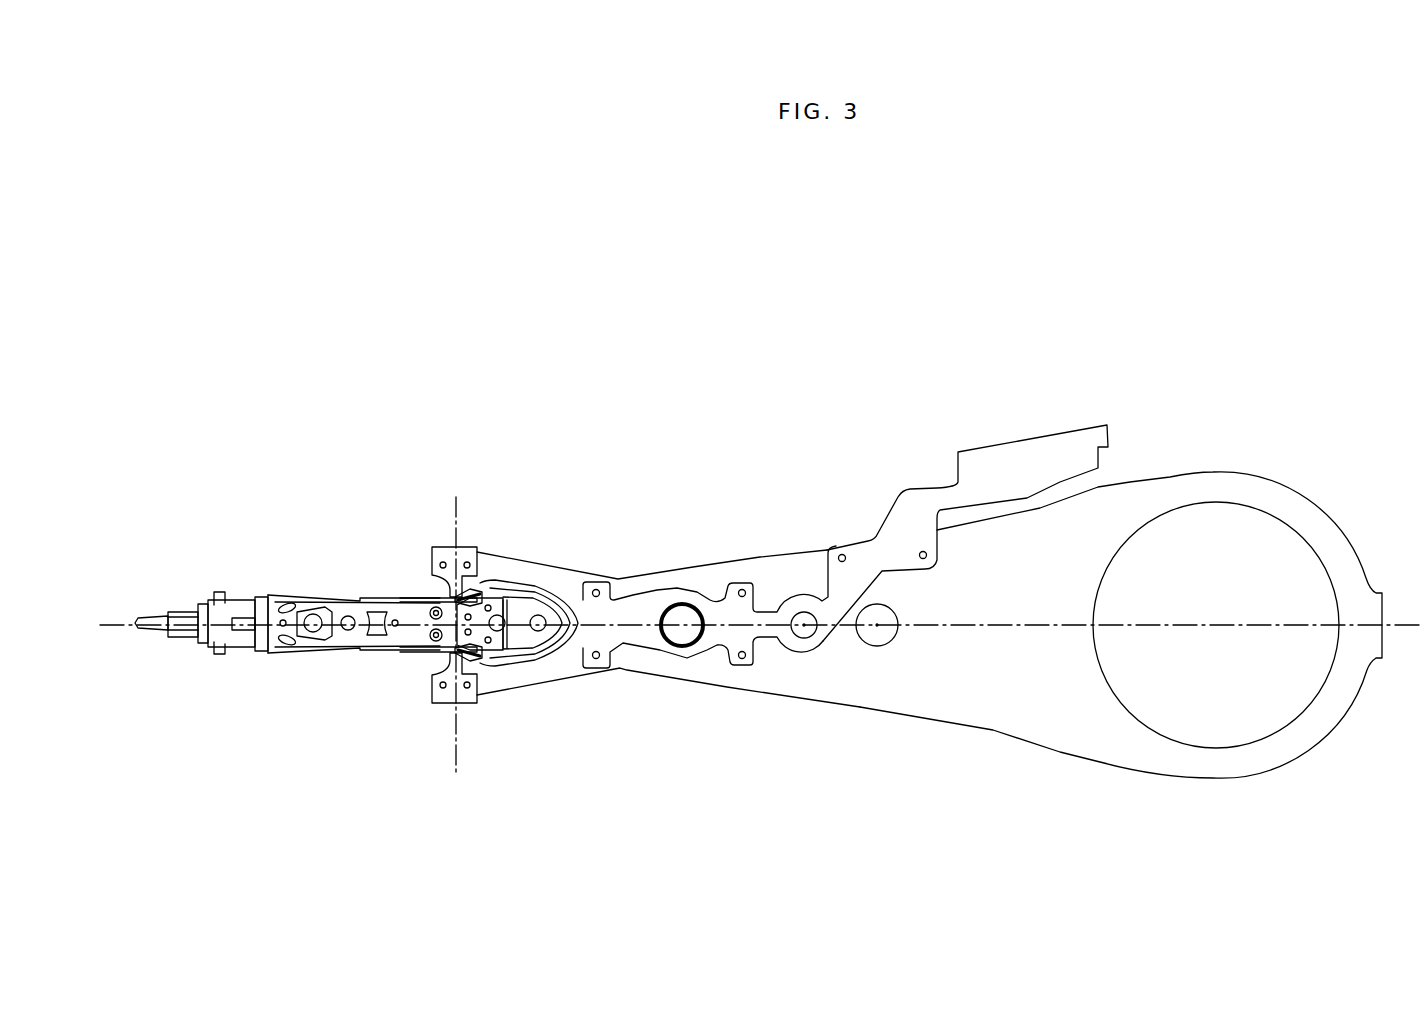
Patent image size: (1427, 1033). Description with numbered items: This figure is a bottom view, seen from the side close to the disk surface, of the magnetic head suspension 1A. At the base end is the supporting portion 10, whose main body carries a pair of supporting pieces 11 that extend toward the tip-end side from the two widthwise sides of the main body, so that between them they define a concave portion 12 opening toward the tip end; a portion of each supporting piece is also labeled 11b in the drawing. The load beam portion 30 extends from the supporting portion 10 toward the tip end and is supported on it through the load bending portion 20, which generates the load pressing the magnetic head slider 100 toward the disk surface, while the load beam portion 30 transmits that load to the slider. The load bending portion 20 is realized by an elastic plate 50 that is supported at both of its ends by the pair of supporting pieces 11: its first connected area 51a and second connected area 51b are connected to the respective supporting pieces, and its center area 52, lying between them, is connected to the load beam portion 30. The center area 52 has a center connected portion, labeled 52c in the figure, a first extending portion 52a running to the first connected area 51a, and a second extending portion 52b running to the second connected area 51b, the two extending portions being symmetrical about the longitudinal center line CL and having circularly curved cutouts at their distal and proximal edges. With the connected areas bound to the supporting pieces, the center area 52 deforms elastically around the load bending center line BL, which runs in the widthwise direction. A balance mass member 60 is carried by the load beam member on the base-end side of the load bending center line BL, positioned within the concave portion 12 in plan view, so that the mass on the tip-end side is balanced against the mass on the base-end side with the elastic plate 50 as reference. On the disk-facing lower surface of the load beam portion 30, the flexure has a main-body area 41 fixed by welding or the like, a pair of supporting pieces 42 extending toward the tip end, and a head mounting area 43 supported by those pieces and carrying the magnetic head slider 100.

The supporting portion 10 is at (728, 727).
The magnetic head suspension 1A is at (729, 502).
The supporting pieces 11 is at (521, 554).
The side edge 11b is at (493, 567).
The concave portion 12 is at (563, 617).
The load bending portion 20 is at (438, 624).
The load beam portion 30 is at (326, 594).
The main-body area 41 is at (407, 633).
The supporting pieces 42 is at (237, 586).
The head mounting area 43 is at (212, 615).
The elastic plate 50 is at (438, 624).
The first connected area 51a is at (468, 546).
The second connected area 51b is at (445, 690).
The center area 52 is at (498, 613).
The first extending portion 52a is at (432, 588).
The second extending portion 52b is at (432, 662).
The clamp plate 52c is at (505, 597).
The balance mass member 60 is at (520, 640).
The magnetic head slider 100 is at (230, 658).
The load bending center line BL is at (460, 493).
The longitudinal center line CL is at (1397, 623).